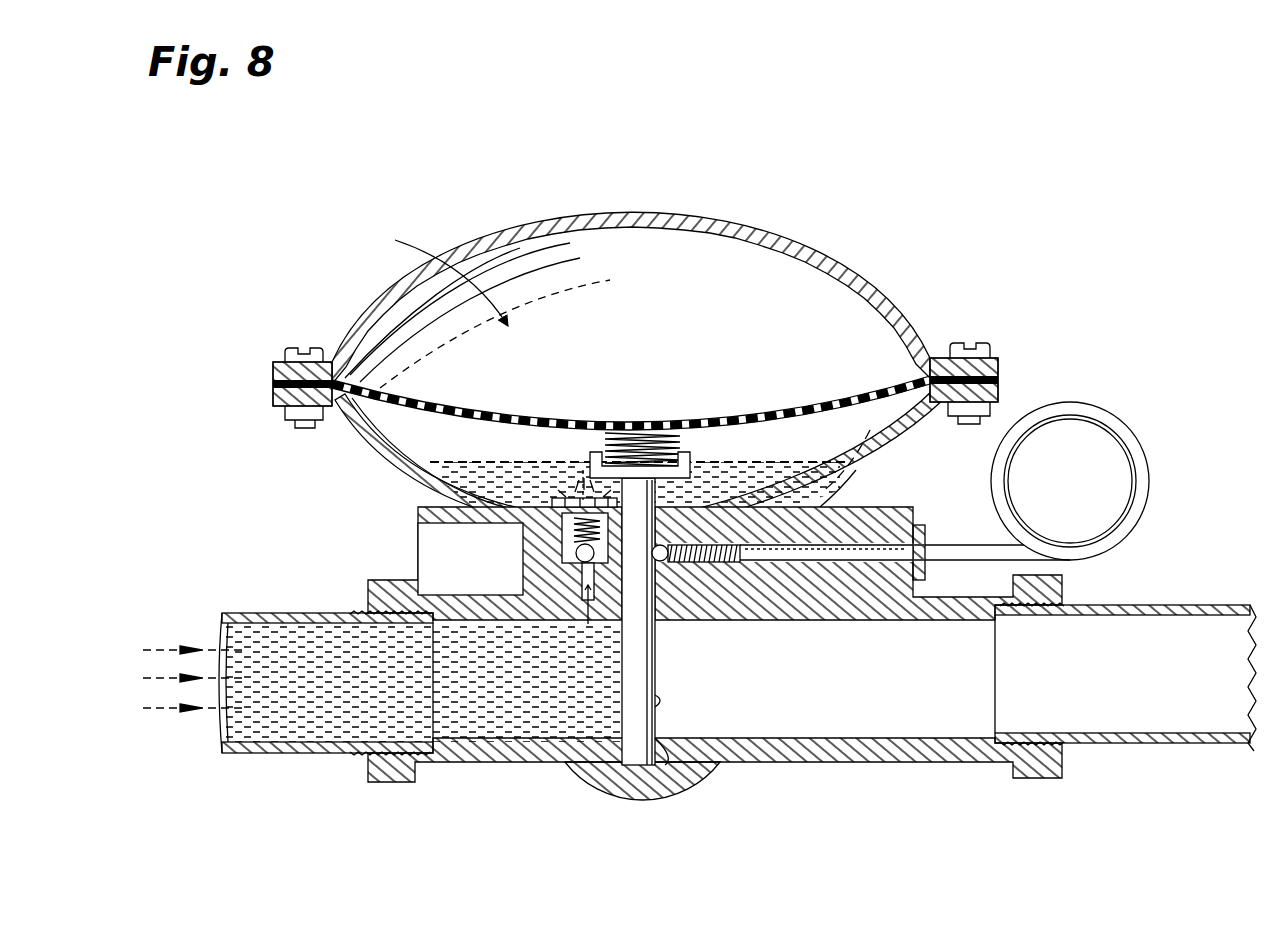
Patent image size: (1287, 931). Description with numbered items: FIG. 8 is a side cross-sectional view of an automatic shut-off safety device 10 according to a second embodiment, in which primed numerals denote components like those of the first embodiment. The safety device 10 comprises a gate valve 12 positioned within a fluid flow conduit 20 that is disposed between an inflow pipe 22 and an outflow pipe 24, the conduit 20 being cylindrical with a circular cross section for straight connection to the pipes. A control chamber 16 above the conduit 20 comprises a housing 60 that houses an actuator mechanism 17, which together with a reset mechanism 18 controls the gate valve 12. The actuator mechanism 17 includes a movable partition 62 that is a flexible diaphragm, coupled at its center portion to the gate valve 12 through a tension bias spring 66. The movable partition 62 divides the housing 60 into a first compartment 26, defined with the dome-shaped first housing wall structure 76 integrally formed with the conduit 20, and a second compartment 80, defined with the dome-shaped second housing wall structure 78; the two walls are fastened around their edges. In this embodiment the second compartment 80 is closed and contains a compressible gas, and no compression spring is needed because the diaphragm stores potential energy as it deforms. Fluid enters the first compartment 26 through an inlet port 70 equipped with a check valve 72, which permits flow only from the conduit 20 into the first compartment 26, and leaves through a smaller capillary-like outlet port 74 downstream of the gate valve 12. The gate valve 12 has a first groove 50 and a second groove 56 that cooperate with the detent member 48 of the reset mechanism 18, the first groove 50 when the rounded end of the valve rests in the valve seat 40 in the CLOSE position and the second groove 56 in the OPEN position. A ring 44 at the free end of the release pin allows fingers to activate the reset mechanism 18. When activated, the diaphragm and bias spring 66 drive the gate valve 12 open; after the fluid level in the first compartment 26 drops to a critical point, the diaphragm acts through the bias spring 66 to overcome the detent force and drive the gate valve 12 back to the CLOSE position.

The safety device 10 is at (997, 172).
The gate valve 12 is at (650, 682).
The control chamber 16 is at (920, 206).
The actuator mechanism 17 is at (411, 207).
The reset mechanism 18 is at (1122, 412).
The fluid flow conduit 20 is at (450, 778).
The inflow pipe 22 is at (282, 548).
The outflow pipe 24 is at (1273, 568).
The first compartment 26 is at (395, 432).
The valve seat 40 is at (612, 765).
The ring 44 is at (1217, 441).
The detent member 48 is at (668, 562).
The first groove 50 is at (661, 563).
The second groove 56 is at (665, 722).
The housing 60 is at (766, 230).
The movable partition 62 is at (490, 356).
The tension bias spring 66 is at (672, 450).
The inlet port 70 is at (583, 592).
The check valve 72 is at (558, 540).
The outlet port 74 is at (758, 520).
The first housing wall structure 76 is at (418, 475).
The second housing wall structure 78 is at (502, 252).
The second compartment 80 is at (640, 250).